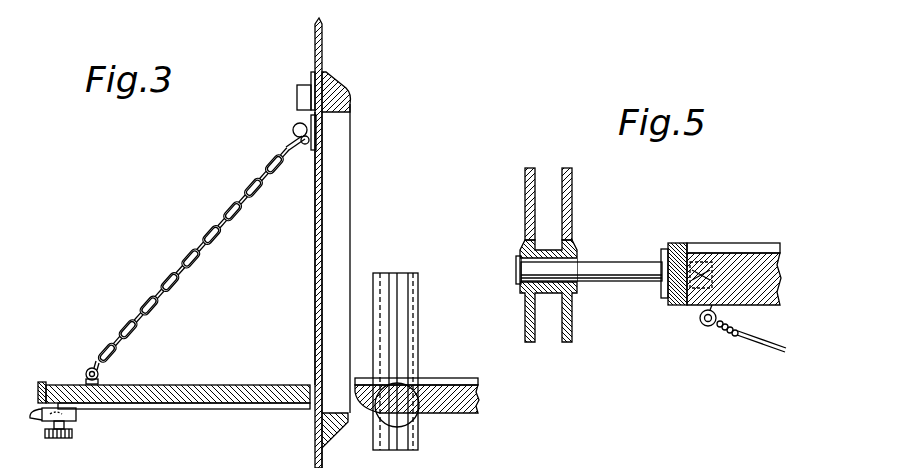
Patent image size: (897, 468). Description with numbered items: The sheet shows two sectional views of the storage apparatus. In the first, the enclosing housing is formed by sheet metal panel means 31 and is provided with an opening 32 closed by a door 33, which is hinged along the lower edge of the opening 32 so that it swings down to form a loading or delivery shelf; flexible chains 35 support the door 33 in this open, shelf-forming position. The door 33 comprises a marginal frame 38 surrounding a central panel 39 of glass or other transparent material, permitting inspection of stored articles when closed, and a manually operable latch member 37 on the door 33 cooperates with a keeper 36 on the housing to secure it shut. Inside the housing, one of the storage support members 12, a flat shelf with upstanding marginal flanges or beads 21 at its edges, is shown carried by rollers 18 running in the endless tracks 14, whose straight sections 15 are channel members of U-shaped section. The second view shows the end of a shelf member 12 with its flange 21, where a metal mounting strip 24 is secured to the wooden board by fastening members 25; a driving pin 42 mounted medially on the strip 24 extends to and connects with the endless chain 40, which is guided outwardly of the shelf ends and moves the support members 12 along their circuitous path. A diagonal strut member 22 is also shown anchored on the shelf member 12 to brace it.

In FIG. 3, the panel means 31 is at (318, 44).
In FIG. 3, the keeper 36 is at (298, 89).
In FIG. 3, the opening 32 is at (322, 229).
In FIG. 3, the flexible chains 35 is at (172, 277).
In FIG. 3, the door 33 is at (96, 331).
In FIG. 3, the marginal frame 38 is at (41, 382).
In FIG. 3, the latch member 37 is at (44, 411).
In FIG. 3, the central panel 39 is at (162, 404).
In FIG. 3, the endless tracks 14 is at (440, 258).
In FIG. 3, the straight sections 15 is at (410, 326).
In FIG. 3, the marginal flanges or beads 21 is at (358, 378).
In FIG. 5, the marginal flanges or beads 21 is at (746, 253).
In FIG. 3, the storage support members 12 is at (455, 394).
In FIG. 5, the storage support members 12 is at (693, 306).
In FIG. 3, the rollers 18 is at (398, 415).
In FIG. 5, the endless chain 40 is at (548, 350).
In FIG. 5, the driving pins 42 is at (619, 264).
In FIG. 5, the metal mounting strips 24 is at (672, 243).
In FIG. 5, the fastening members 25 is at (706, 253).
In FIG. 5, the diagonal strut members 22 is at (753, 340).